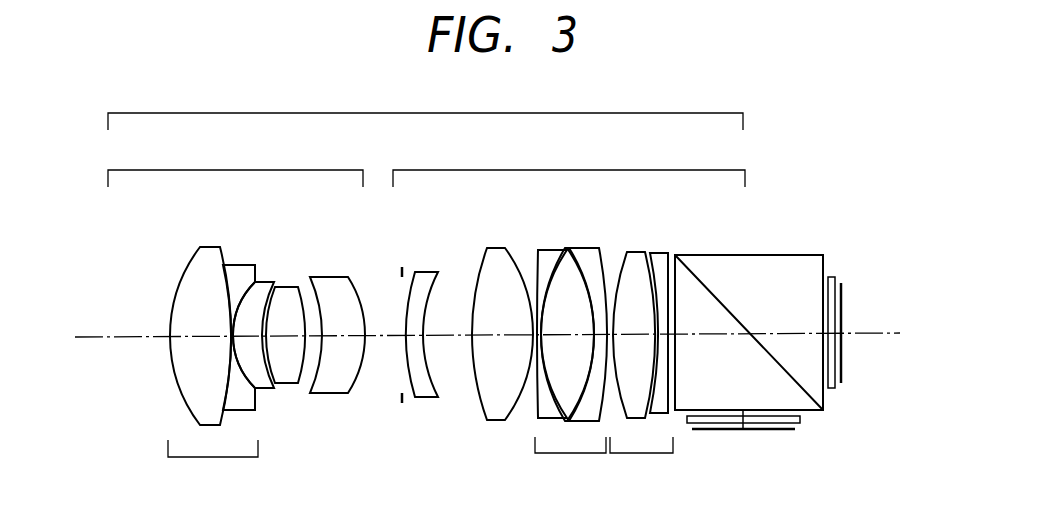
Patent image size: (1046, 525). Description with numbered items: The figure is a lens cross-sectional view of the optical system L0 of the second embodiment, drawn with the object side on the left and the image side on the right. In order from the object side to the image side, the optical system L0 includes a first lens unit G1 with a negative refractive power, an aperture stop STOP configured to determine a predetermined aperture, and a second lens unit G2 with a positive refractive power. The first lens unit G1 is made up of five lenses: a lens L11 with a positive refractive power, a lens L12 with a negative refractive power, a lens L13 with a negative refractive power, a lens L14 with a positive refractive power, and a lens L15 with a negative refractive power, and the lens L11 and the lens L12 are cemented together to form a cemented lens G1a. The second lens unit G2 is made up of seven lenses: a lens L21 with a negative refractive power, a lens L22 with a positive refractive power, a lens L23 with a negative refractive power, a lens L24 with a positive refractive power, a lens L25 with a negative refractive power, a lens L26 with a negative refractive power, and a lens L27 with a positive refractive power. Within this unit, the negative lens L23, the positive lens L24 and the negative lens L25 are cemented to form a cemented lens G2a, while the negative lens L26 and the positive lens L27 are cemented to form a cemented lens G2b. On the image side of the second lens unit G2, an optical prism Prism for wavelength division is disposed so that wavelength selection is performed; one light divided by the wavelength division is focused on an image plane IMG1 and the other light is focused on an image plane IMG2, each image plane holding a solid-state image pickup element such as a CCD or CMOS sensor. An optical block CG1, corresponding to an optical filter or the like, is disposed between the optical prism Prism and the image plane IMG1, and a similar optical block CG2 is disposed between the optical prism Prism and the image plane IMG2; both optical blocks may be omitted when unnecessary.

The optical system L0 is at (425, 106).
The first lens unit G1 is at (235, 164).
The second lens unit G2 is at (569, 163).
The cemented lens G1a is at (213, 465).
The cemented lens G2a is at (570, 462).
The cemented lens G2b is at (641, 462).
The lens L11 is at (196, 268).
The lens L12 is at (237, 267).
The lens L13 is at (265, 287).
The lens L14 is at (288, 292).
The lens L15 is at (335, 285).
The lens L21 is at (425, 273).
The lens L22 is at (495, 252).
The lens L23 is at (545, 250).
The lens L24 is at (568, 255).
The lens L25 is at (592, 248).
The lens L26 is at (638, 252).
The lens L27 is at (658, 258).
The aperture stop STOP is at (402, 403).
The optical prism Prism is at (785, 265).
The optical block CG1 is at (830, 278).
The image plane IMG1 is at (842, 300).
The optical block CG2 is at (801, 420).
The image plane IMG2 is at (768, 429).